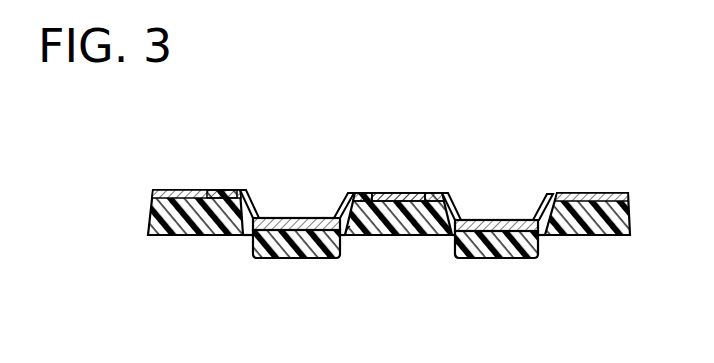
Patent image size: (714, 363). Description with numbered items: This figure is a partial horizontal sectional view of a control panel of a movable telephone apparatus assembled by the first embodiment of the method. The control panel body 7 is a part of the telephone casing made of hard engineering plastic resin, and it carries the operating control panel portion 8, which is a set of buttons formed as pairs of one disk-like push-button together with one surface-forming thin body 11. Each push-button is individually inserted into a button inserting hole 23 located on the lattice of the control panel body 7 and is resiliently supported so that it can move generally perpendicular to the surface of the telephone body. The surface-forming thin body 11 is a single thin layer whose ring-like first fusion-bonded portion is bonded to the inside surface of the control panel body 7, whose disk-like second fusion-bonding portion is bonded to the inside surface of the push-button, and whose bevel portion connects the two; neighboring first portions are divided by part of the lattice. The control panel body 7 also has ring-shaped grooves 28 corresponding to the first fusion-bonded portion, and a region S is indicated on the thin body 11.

The control panel body 7 is at (588, 236).
The operating control panel portion 8 is at (520, 271).
The surface-forming thin body 11 is at (331, 194).
The button inserting hole 23 is at (343, 237).
The groove 28 is at (222, 197).
The solder region S is at (404, 192).